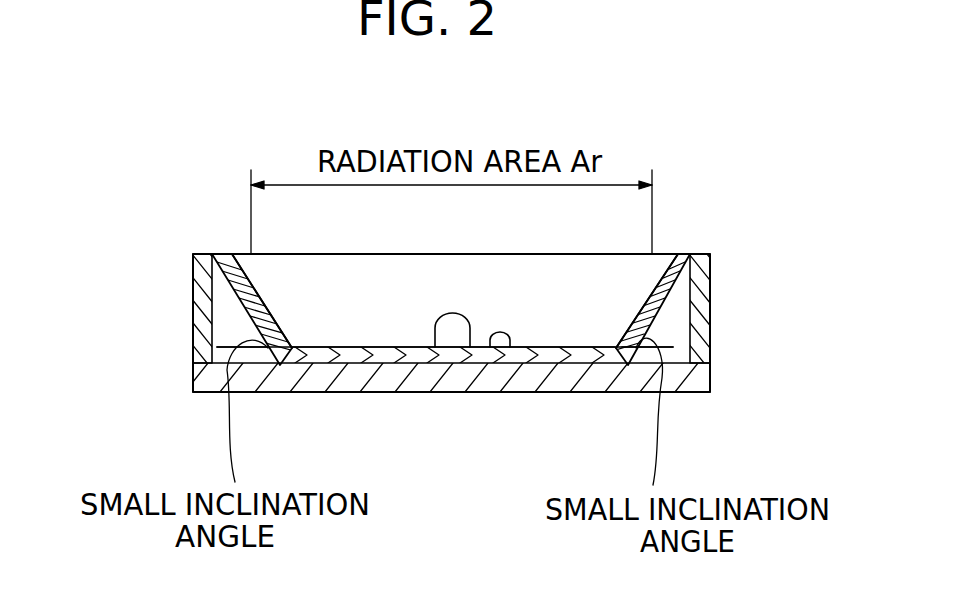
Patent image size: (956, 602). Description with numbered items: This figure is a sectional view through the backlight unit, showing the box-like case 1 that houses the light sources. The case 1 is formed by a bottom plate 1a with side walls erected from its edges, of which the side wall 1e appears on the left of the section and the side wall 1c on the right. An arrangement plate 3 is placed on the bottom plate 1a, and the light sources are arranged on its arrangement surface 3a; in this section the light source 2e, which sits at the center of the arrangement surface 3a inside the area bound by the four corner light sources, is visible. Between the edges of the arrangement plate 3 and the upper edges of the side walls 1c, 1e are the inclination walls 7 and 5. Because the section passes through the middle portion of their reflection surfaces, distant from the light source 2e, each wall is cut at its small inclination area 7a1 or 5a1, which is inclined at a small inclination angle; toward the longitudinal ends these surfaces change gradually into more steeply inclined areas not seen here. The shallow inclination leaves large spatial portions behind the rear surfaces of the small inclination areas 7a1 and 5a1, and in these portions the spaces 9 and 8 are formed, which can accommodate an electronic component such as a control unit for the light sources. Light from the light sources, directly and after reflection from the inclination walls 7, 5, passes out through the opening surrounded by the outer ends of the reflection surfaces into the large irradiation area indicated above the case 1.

The case 1 is at (449, 366).
The bottom plate 1a is at (413, 378).
The side wall 1c is at (700, 291).
The side wall 1e is at (192, 262).
The light source 2e is at (457, 325).
The arrangement plate 3 is at (445, 409).
The arrangement surface 3a is at (502, 356).
The inclination wall 5 is at (621, 264).
The small inclination area 5a1 is at (657, 282).
The inclination wall 7 is at (278, 264).
The small inclination area 7a1 is at (263, 284).
The space 8 is at (673, 325).
The space 9 is at (192, 336).